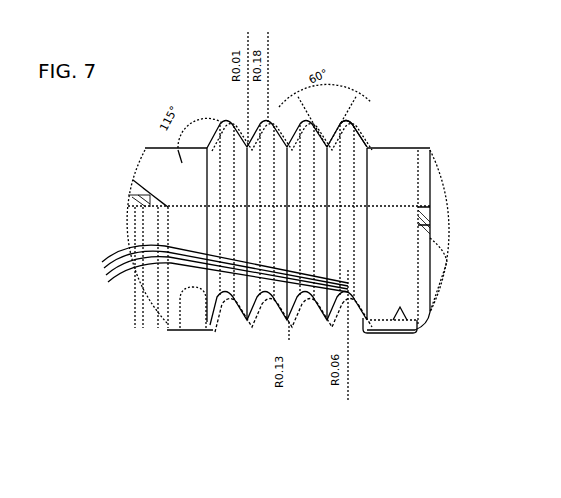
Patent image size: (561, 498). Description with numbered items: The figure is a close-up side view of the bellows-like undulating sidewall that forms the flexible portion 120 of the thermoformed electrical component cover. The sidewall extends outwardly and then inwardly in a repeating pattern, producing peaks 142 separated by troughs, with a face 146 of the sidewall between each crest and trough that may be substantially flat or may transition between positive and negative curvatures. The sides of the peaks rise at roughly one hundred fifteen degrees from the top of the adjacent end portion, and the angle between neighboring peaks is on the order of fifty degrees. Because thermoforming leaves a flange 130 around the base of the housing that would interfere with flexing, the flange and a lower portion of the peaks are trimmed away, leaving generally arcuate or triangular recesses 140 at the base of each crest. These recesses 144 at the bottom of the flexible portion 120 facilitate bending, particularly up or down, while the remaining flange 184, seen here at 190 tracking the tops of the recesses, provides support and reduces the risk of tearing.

The flexible portion 120 is at (447, 290).
The flange 130 is at (403, 333).
The recesses 140 is at (232, 325).
The peaks 142 is at (350, 140).
The recesses 144 is at (252, 323).
The face 146 is at (337, 130).
The flange 184 is at (173, 333).
The flange 190 is at (211, 270).